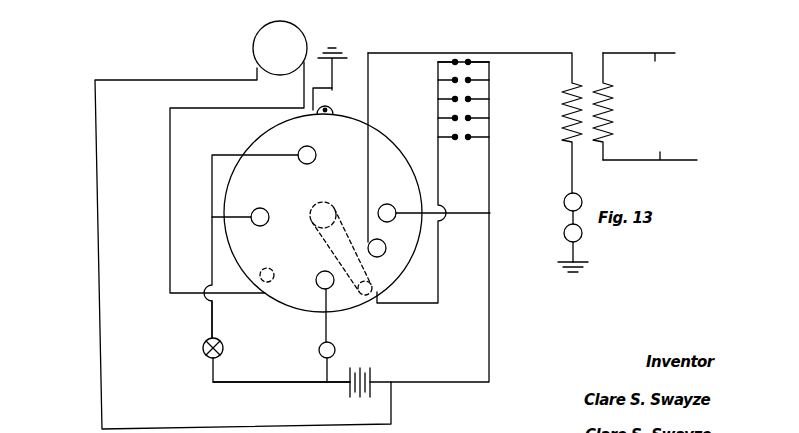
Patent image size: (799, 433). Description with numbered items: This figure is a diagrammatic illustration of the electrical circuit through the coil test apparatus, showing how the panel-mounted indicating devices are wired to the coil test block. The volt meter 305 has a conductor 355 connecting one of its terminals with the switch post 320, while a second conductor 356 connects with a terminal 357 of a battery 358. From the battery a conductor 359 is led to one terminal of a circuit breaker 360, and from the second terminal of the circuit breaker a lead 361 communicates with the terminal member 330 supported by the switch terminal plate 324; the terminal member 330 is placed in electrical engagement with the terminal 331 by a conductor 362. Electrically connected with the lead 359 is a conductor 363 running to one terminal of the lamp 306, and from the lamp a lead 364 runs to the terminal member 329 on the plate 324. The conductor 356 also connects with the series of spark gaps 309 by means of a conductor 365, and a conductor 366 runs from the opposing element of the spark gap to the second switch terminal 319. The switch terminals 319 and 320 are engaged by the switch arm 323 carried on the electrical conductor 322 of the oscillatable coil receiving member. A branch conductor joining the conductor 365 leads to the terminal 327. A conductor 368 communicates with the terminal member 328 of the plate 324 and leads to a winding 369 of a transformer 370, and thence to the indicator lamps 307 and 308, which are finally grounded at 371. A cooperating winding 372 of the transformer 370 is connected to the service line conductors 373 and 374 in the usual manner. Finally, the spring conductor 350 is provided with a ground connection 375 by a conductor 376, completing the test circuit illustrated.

The volt meter 305 is at (293, 31).
The lamp 306 is at (334, 349).
The lamp 307 is at (564, 202).
The lamp 308 is at (564, 233).
The series of spark gaps 309 is at (459, 68).
The switch terminal 319 is at (369, 283).
The switch terminal 320 is at (266, 283).
The electrical conductor 322 is at (315, 211).
The switch arm 323 is at (344, 222).
The switch terminal plate 324 is at (258, 146).
The contact member 327 is at (387, 204).
The contact member 328 is at (383, 247).
The contact member 329 is at (321, 275).
The contact member 330 is at (260, 226).
The contact member 331 is at (305, 165).
The spring conductor 350 is at (325, 120).
The conductor 355 is at (304, 92).
The conductor 356 is at (232, 80).
The terminal 357 is at (377, 382).
The battery 358 is at (368, 368).
The conductor 359 is at (306, 384).
The circuit breaker 360 is at (203, 348).
The lead 361 is at (210, 305).
The conductor 362 is at (222, 153).
The conductor 363 is at (325, 371).
The lead 364 is at (322, 333).
The conductor 365 is at (491, 314).
The conductor 366 is at (441, 273).
The conductor 368 is at (370, 118).
The winding 369 is at (566, 109).
The transformer 370 is at (585, 68).
The ground 371 is at (561, 263).
The cooperating winding 372 is at (612, 114).
The service line conductor 373 is at (639, 63).
The service line conductor 374 is at (650, 152).
The ground connection 375 is at (340, 53).
The conductor 376 is at (332, 90).